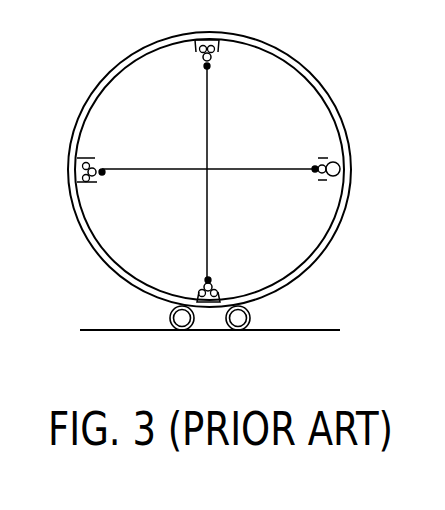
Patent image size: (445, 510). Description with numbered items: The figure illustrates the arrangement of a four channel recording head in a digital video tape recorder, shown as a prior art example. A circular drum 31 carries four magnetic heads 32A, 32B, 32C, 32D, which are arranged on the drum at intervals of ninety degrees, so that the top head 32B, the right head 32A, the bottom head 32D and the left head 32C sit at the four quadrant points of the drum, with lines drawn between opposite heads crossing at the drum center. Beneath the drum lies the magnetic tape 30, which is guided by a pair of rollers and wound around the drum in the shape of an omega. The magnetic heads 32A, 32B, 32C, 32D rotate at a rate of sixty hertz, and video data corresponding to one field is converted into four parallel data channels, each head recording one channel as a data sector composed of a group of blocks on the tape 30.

The magnetic tape 30 is at (318, 330).
The cylindrical body / ring 31 is at (313, 106).
The magnetic head 32A is at (316, 178).
The magnetic head 32B is at (220, 62).
The magnetic head 32C is at (80, 158).
The magnetic head 32D is at (200, 278).